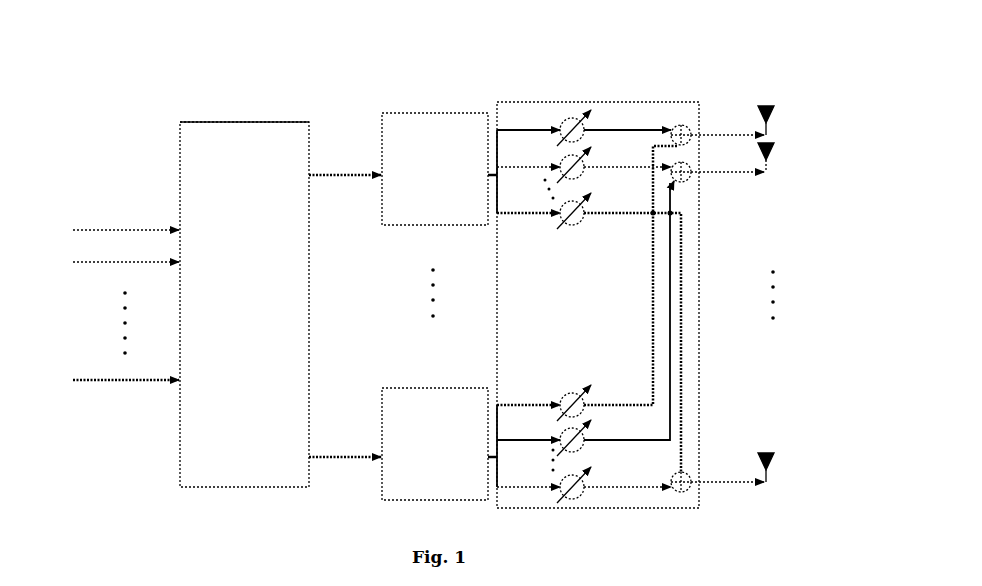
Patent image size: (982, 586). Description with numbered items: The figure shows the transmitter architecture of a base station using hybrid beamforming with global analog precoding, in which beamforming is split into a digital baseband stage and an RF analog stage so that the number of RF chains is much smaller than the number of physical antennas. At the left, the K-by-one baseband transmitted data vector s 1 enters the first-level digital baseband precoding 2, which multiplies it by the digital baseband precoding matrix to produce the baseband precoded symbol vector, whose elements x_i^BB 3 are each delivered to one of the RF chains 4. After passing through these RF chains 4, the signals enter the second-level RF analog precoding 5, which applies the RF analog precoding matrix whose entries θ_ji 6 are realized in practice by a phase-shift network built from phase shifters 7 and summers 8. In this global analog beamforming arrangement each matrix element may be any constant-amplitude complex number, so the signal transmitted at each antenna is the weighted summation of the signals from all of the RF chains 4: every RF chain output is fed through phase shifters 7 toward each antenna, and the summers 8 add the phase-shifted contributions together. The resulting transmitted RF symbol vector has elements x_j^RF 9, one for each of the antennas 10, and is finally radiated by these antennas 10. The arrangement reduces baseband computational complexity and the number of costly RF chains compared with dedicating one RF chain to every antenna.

The baseband transmitted data vector s 1 is at (95, 326).
The digital baseband precoding 2 is at (224, 118).
The baseband precoded symbol element x_i^BB 3 is at (336, 140).
The RF chains 4 is at (409, 106).
The RF analog precoding 5 is at (645, 82).
The phase shift element θ_ji 6 is at (513, 99).
The phase shifters 7 is at (605, 118).
The summers 8 is at (692, 185).
The transmitted RF symbol element x_j^RF 9 is at (730, 100).
The antennas 10 is at (770, 93).